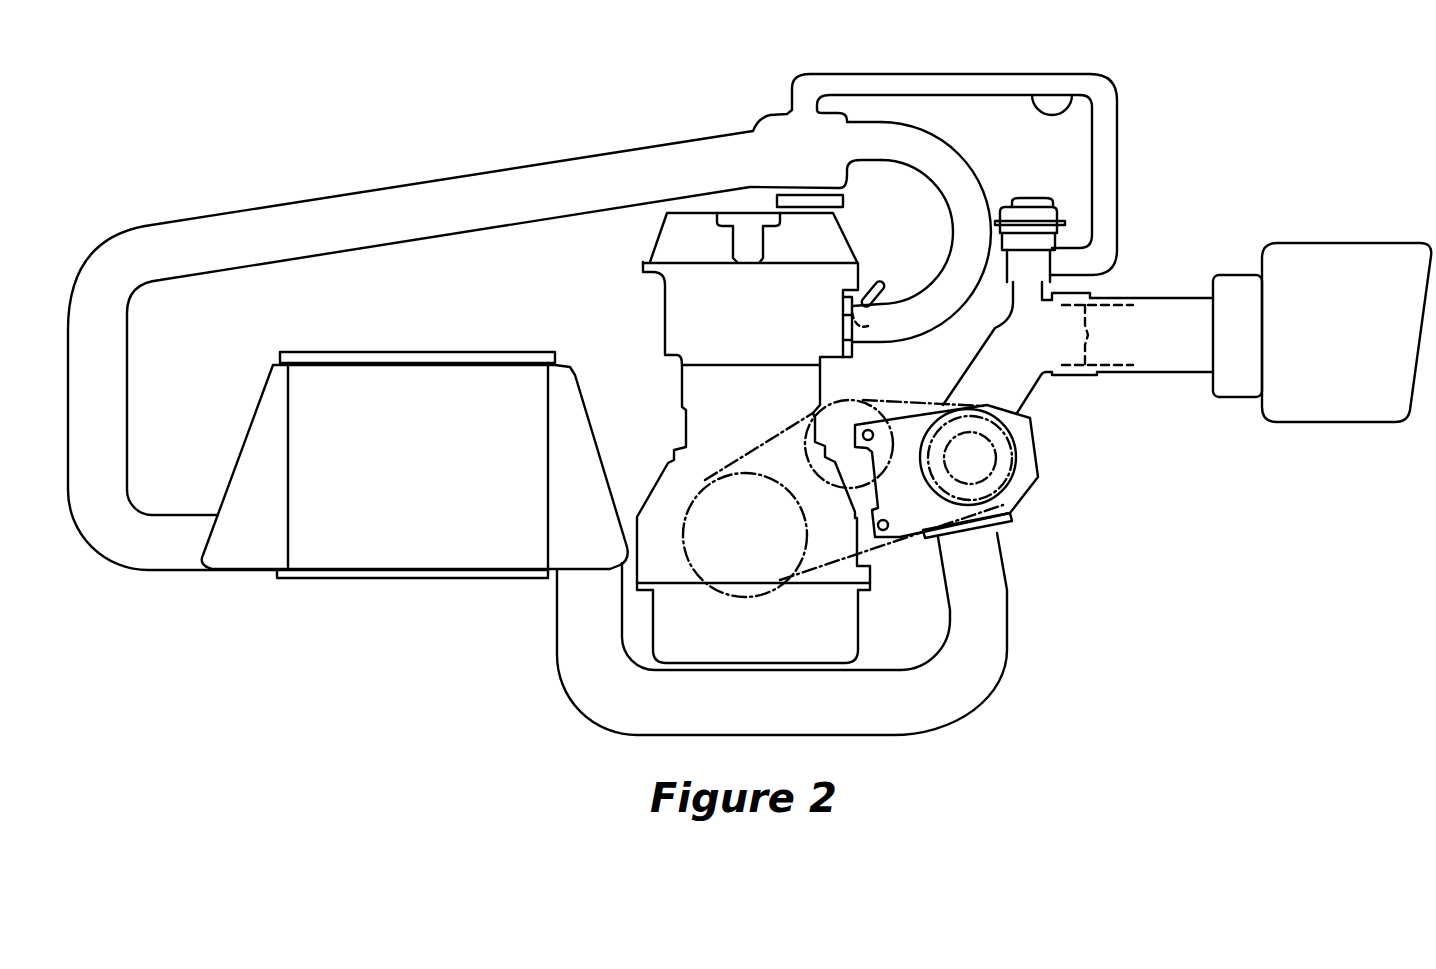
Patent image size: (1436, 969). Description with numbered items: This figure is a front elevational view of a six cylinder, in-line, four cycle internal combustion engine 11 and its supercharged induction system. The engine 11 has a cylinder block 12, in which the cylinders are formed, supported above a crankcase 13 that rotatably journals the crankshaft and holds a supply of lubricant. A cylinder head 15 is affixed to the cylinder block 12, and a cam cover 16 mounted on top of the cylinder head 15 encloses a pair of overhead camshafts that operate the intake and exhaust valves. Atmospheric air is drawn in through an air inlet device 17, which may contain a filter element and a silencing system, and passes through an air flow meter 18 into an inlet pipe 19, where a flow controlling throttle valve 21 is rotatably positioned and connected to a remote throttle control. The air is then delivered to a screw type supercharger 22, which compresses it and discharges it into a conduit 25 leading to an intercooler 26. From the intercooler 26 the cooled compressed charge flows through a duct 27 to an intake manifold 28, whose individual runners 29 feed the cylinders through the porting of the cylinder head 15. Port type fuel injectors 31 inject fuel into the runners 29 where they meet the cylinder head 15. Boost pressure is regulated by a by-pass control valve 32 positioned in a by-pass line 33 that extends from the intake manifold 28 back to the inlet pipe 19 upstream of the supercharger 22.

The internal combustion engine 11 is at (754, 448).
The cylinder block 12 is at (653, 497).
The crankcase 13 is at (650, 622).
The cylinder head 15 is at (663, 323).
The cam cover 16 is at (653, 231).
The air inlet device 17 is at (1322, 422).
The air flow meter 18 is at (1233, 397).
The inlet pipe 19 is at (1135, 300).
The throttle valve 21 is at (1097, 350).
The supercharger 22 is at (1025, 495).
The conduit 25 is at (1008, 652).
The intercooler 26 is at (390, 578).
The duct 27 is at (313, 196).
The intake manifold 28 is at (767, 112).
The runners 29 is at (983, 170).
The fuel injectors 31 is at (890, 282).
The by-pass control valve 32 is at (1022, 198).
The by-pass line 33 is at (1082, 95).